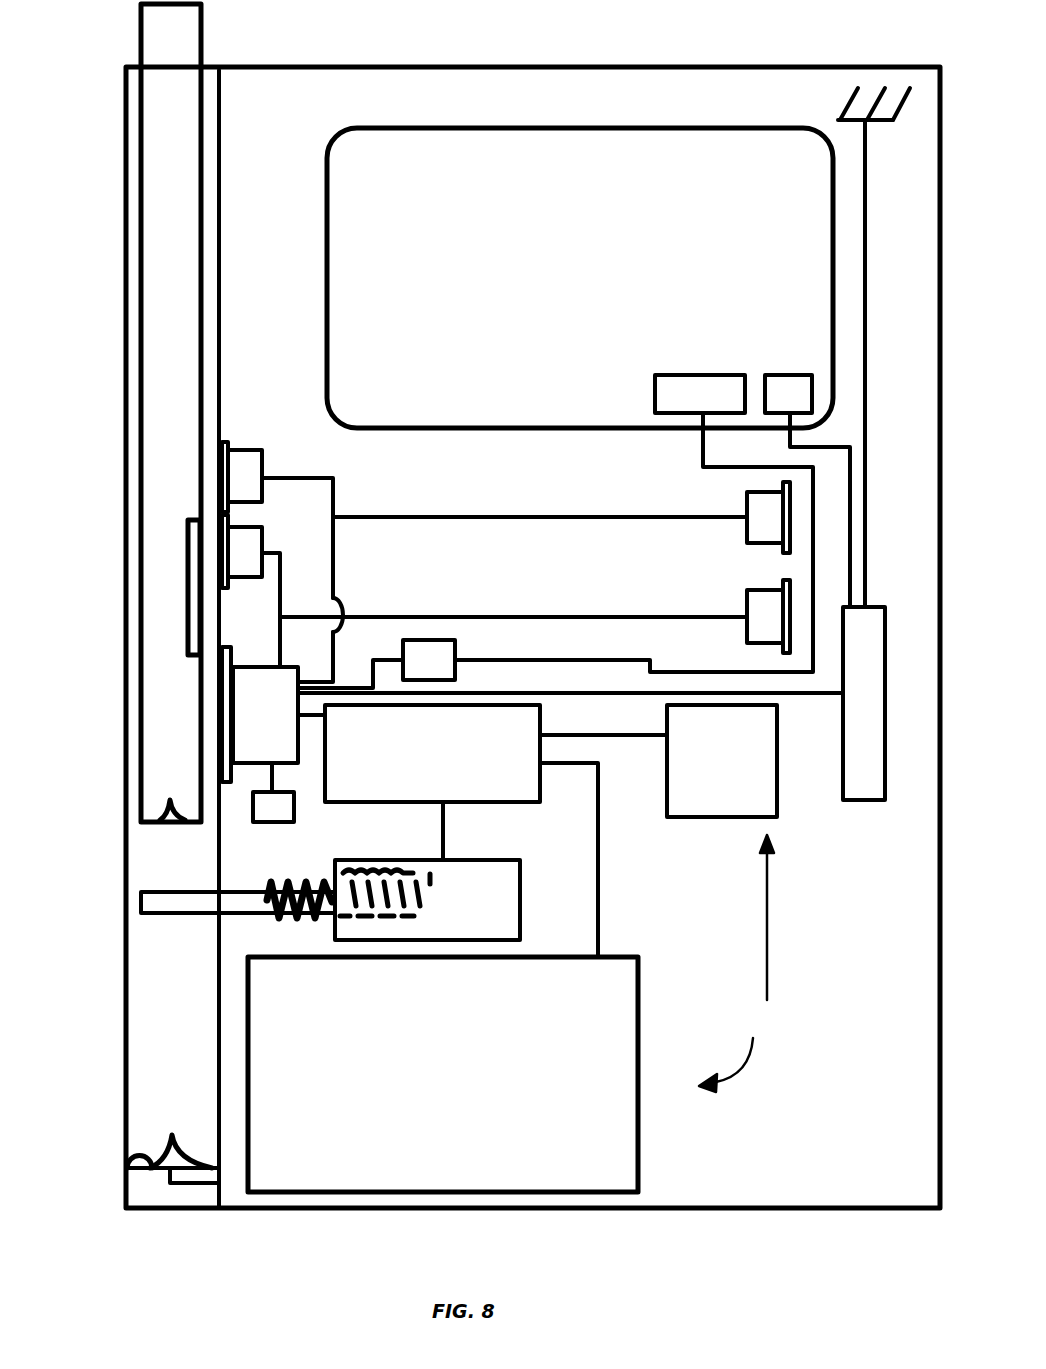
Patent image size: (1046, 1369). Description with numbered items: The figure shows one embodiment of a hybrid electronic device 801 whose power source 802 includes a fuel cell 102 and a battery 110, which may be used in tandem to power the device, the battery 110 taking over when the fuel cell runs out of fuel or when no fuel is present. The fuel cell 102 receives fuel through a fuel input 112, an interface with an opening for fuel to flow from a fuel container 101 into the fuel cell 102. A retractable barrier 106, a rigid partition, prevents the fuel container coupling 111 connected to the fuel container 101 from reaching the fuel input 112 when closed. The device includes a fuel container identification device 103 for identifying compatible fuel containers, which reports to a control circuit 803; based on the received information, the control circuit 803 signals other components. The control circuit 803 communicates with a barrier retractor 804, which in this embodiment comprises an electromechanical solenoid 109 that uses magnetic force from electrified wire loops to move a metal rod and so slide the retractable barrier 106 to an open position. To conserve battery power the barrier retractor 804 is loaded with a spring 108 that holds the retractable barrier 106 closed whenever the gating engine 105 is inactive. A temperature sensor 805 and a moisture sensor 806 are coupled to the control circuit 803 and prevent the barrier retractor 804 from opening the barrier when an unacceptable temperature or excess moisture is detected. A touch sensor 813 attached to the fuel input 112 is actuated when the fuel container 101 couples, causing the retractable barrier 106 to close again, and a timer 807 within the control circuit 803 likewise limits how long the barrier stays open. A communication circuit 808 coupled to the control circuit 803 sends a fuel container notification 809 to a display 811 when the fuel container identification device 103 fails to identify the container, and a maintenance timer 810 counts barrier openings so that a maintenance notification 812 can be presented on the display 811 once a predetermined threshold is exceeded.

The hybrid electronic device 801 is at (545, 90).
The fuel container 101 is at (173, 246).
The fuel container identification device 103 is at (219, 692).
The fuel container coupling 111 is at (165, 822).
The display 811 is at (327, 258).
The fuel container notification 809 is at (690, 378).
The maintenance notification 812 is at (782, 378).
The temperature sensor 805 is at (747, 522).
The moisture sensor 806 is at (747, 592).
The control circuit 803 is at (262, 680).
The maintenance timer 810 is at (418, 640).
The barrier retractor 804 is at (398, 785).
The timer 807 is at (255, 810).
The communication circuit 808 is at (868, 802).
The battery 110 is at (745, 818).
The gating engine 105 is at (518, 860).
The electromechanical solenoid 109 is at (432, 884).
The retractable barrier 106 is at (208, 905).
The spring 108 is at (308, 888).
The fuel cell 102 is at (558, 1053).
The power source 802 is at (738, 963).
The fuel input 112 is at (172, 1135).
The touch sensor 813 is at (140, 1152).